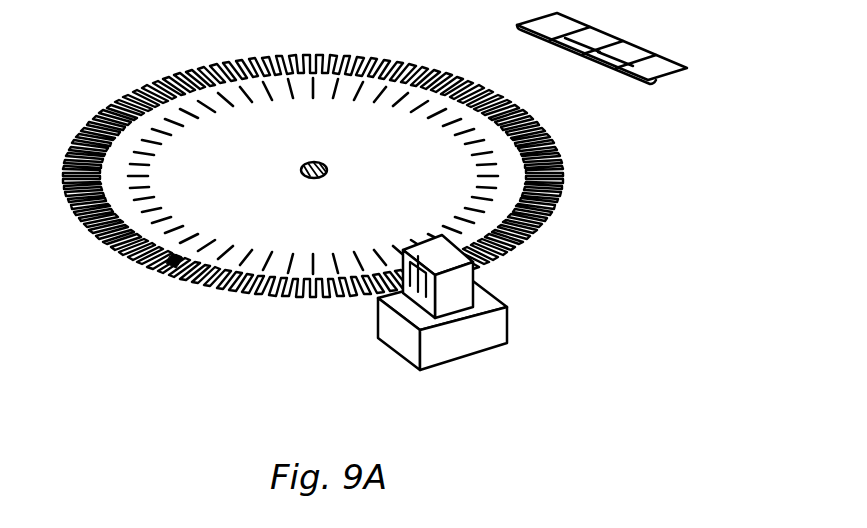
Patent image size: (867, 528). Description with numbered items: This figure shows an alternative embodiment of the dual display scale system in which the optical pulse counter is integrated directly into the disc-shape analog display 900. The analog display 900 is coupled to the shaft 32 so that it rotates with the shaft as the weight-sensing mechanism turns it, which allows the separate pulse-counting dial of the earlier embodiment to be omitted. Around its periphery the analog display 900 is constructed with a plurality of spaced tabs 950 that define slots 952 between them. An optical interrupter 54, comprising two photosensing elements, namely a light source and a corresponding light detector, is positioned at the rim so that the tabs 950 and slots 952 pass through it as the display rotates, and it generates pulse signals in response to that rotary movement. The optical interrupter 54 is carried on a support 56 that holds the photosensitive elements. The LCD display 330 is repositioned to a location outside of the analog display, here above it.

The shaft 32 is at (312, 163).
The disc-shape analog display 900 is at (309, 191).
The tabs 950 is at (125, 252).
The slots 952 is at (177, 260).
The LCD display 330 is at (663, 75).
The optical interrupter 54 is at (450, 300).
The support 56 is at (402, 338).